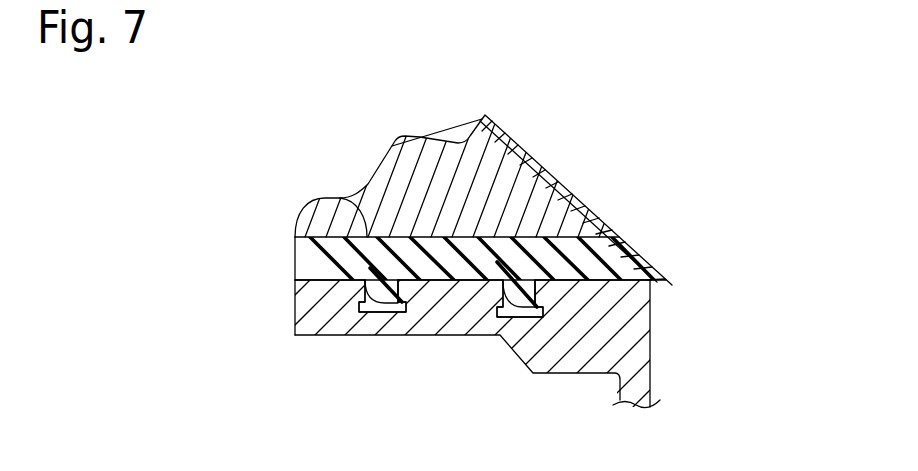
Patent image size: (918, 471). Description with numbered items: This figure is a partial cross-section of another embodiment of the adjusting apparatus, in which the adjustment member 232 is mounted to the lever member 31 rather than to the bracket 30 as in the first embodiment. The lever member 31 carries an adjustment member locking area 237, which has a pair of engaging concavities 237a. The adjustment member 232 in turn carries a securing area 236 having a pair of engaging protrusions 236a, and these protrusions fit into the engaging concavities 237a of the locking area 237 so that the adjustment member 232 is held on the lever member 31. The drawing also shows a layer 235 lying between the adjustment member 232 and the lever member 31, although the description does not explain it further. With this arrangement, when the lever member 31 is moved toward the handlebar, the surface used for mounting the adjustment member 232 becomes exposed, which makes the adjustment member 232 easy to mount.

The bracket 30 is at (589, 151).
The lever member 31 is at (552, 352).
The adjustment member 232 is at (633, 246).
The intermediate plate 235 is at (307, 272).
The securing area 236 is at (426, 368).
The engaging protrusions 236a is at (487, 397).
The adjustment member locking area 237 is at (359, 177).
The engaging concavities 237a is at (335, 104).